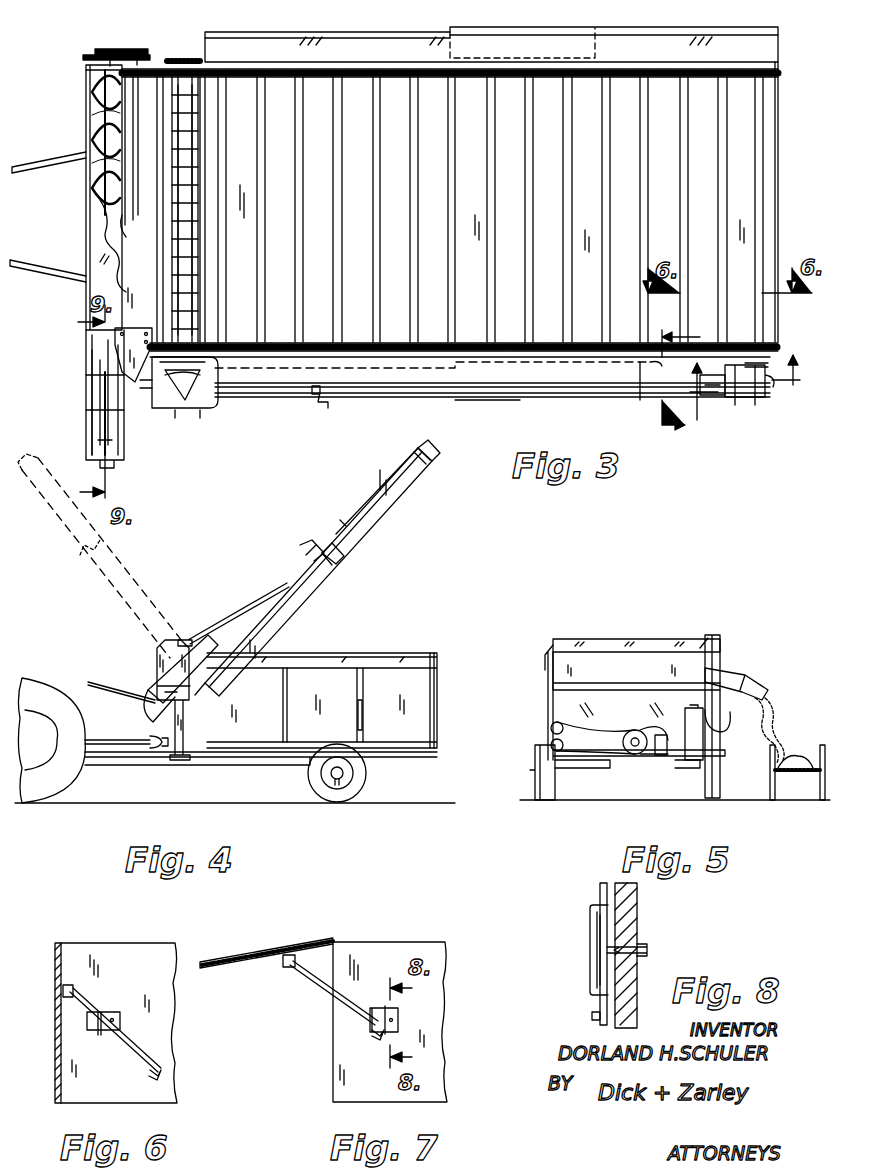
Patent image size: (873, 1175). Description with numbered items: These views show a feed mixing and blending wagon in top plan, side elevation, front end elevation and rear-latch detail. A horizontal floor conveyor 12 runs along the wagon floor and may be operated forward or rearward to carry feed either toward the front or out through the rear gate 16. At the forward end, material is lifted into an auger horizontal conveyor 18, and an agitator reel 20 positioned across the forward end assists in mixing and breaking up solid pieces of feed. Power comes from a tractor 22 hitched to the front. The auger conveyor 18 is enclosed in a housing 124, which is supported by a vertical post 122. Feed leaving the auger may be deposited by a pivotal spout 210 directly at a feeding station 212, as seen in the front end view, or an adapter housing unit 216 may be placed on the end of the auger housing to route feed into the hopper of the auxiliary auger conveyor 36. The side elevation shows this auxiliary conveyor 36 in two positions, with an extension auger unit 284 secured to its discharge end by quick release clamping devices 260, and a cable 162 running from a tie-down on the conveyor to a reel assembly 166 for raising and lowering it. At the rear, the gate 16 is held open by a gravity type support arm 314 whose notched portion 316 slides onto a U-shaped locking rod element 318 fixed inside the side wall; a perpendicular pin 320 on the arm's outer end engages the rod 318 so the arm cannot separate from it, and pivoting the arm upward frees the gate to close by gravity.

In FIG. 3, the horizontal floor conveyor 12 is at (748, 122).
In FIG. 3, the rear gate 16 is at (757, 396).
In FIG. 6, the rear gate 16 is at (55, 1050).
In FIG. 7, the rear gate 16 is at (248, 965).
In FIG. 3, the auger horizontal conveyor 18 is at (107, 80).
In FIG. 3, the agitator reel 20 is at (190, 133).
In FIG. 3, the tractor 22 is at (715, 380).
In FIG. 4, the auxiliary auger conveyor 36 is at (312, 582).
In FIG. 5, the vertical post 122 is at (722, 648).
In FIG. 5, the auger housing 124 is at (560, 640).
In FIG. 4, the cable 162 is at (243, 605).
In FIG. 3, the reel assembly 166 is at (310, 394).
In FIG. 5, the spout 210 is at (745, 677).
In FIG. 5, the feeding station 212 is at (767, 750).
In FIG. 3, the adapter housing unit 216 is at (125, 442).
In FIG. 4, the quick release clamping device 260 is at (340, 546).
In FIG. 4, the extension auger unit 284 is at (380, 509).
In FIG. 6, the gravity type support arm 314 is at (125, 1050).
In FIG. 7, the gravity type support arm 314 is at (318, 992).
In FIG. 8, the gravity type support arm 314 is at (600, 890).
In FIG. 6, the notched portion 316 is at (152, 1078).
In FIG. 7, the notched portion 316 is at (375, 1040).
In FIG. 6, the U-shaped locking rod element 318 is at (100, 1011).
In FIG. 7, the U-shaped locking rod element 318 is at (386, 1006).
In FIG. 8, the U-shaped locking rod element 318 is at (590, 950).
In FIG. 8, the perpendicular pin 320 is at (592, 1015).